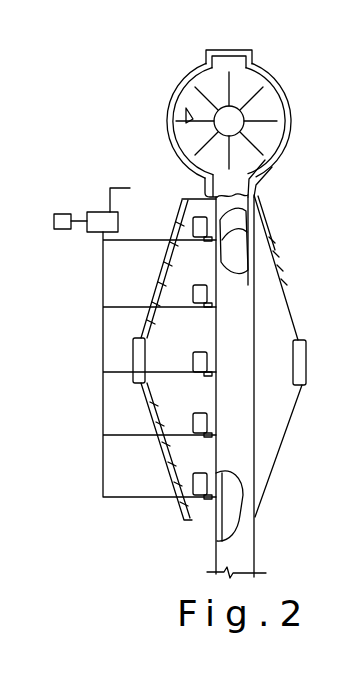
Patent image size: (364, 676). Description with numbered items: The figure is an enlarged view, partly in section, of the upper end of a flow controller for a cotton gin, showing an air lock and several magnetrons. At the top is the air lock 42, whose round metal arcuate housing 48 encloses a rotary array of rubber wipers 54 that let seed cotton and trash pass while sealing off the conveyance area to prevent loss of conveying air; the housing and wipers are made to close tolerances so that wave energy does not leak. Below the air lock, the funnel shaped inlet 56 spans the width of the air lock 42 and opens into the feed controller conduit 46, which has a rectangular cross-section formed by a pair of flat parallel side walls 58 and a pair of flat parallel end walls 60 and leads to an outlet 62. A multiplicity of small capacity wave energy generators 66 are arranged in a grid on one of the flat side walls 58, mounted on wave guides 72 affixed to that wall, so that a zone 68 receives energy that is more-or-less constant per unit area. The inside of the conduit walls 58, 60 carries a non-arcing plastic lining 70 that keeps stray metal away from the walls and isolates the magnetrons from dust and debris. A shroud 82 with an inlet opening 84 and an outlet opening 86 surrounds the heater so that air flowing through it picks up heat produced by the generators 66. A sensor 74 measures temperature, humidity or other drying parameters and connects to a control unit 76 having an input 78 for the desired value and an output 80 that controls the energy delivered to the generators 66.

The air lock 42 is at (296, 103).
The arcuate housing 48 is at (180, 83).
The wipers 54 is at (166, 121).
The funnel shaped inlet 56 is at (273, 170).
The end walls 60 is at (236, 387).
The lining 70 is at (219, 473).
The feed controller conduit 46 is at (259, 246).
The inlet opening 84 is at (306, 352).
The side walls 58 is at (213, 342).
The output 80 is at (103, 264).
The shroud 82 is at (163, 449).
The outlet opening 86 is at (133, 360).
The zone 68 is at (189, 222).
The wave guides 72 is at (206, 242).
The wave energy generators 66 is at (193, 421).
The control unit 76 is at (101, 212).
The sensor 74 is at (64, 232).
The input 78 is at (118, 187).
The outlet 62 is at (357, 257).